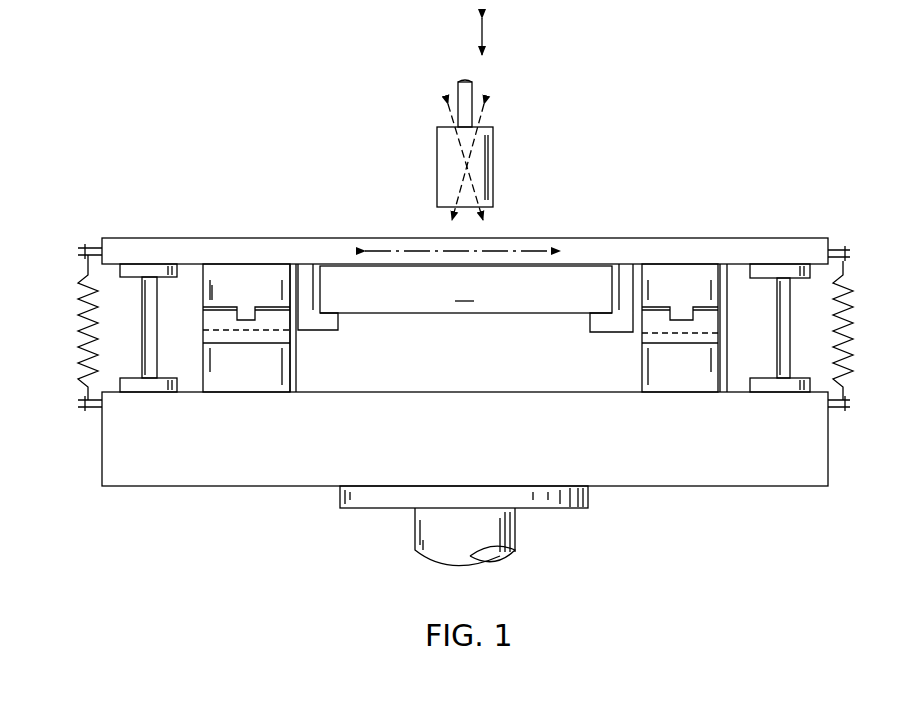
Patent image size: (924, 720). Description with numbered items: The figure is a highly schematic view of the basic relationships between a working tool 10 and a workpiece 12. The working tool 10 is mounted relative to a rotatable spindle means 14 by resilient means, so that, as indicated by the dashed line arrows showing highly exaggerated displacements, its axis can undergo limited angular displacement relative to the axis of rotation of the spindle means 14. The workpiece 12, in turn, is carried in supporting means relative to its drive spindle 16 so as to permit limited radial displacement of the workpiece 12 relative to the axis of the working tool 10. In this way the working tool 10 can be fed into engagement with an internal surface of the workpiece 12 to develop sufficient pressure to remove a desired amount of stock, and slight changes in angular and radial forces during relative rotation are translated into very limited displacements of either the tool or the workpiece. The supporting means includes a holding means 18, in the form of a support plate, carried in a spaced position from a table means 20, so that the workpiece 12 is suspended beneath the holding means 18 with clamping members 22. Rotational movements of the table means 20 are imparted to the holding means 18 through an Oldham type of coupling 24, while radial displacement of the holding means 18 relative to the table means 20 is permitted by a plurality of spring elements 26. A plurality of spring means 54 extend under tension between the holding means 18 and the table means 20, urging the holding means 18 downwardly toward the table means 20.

The working tool 10 is at (494, 154).
The workpiece 12 is at (500, 314).
The rotatable spindle means 14 is at (458, 90).
The drive spindle 16 is at (512, 538).
The holding means 18 is at (731, 240).
The table means 20 is at (830, 440).
The clamping members 22 is at (332, 333).
The Oldham type of coupling 24 is at (199, 330).
The spring elements 26 is at (142, 318).
The spring means 54 is at (78, 300).